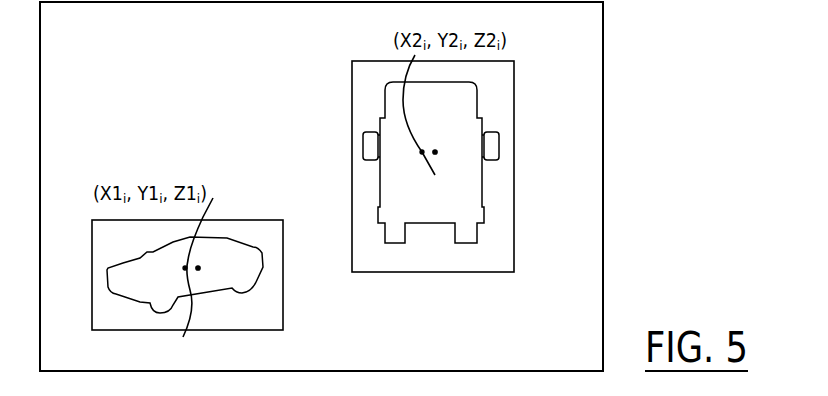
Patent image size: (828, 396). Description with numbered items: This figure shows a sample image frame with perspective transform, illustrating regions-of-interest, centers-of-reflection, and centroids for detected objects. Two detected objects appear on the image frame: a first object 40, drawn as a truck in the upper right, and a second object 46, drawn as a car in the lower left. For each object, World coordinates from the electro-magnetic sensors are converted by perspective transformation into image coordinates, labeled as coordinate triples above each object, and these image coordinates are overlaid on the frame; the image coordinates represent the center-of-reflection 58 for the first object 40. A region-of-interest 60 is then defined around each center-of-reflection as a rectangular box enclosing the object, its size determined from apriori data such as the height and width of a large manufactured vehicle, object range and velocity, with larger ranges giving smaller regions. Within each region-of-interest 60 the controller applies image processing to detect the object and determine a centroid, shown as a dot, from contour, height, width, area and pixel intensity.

The first object 40 is at (380, 116).
The second object 46 is at (108, 275).
The center-of-reflection 58 is at (456, 190).
The region-of-interest 60 is at (135, 332).